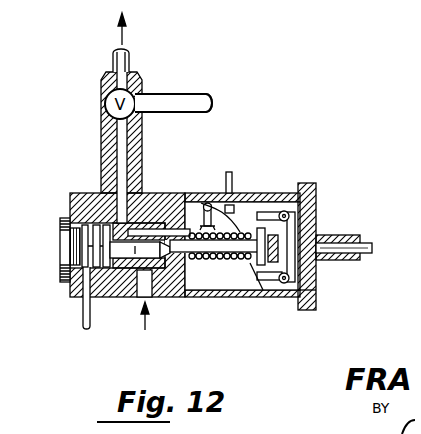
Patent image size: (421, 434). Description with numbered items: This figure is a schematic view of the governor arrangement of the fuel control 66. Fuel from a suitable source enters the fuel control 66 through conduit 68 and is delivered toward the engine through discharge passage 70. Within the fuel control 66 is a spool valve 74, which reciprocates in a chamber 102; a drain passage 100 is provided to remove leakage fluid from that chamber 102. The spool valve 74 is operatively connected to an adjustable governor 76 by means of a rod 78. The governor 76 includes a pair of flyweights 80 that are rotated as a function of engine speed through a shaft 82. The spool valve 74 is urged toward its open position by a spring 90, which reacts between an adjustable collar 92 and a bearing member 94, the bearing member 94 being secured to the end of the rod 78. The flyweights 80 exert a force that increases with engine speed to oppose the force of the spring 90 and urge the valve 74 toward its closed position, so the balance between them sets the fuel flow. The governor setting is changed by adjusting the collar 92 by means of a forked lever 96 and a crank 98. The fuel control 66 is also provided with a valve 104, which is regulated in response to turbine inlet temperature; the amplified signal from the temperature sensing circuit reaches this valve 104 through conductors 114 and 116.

The fuel control 66 is at (309, 180).
The conduit 68 is at (162, 284).
The discharge passage 70 is at (129, 62).
The spool valve 74 is at (132, 278).
The adjustable governor 76 is at (316, 186).
The rod 78 is at (235, 262).
The flyweights 80 is at (285, 300).
The shaft 82 is at (355, 255).
The spring 90 is at (274, 204).
The adjustable collar 92 is at (242, 235).
The bearing member 94 is at (269, 281).
The forked lever 96 is at (201, 203).
The crank 98 is at (210, 192).
The drain passage 100 is at (80, 312).
The chamber 102 is at (101, 200).
The valve 104 is at (104, 104).
The conductor 114 is at (200, 94).
The conductor 116 is at (214, 110).